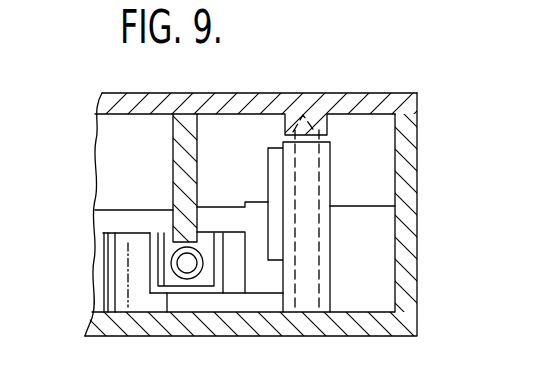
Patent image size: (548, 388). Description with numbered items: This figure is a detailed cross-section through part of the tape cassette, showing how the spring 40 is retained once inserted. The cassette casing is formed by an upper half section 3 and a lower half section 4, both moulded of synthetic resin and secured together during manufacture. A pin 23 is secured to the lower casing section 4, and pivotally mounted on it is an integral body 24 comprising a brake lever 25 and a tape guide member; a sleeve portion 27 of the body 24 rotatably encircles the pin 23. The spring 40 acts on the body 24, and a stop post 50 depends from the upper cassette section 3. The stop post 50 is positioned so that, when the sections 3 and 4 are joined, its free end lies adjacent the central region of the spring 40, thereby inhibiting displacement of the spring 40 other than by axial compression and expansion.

The upper half section 3 is at (402, 99).
The lower half section 4 is at (407, 266).
The stop post 50 is at (184, 186).
The sleeve portion 27 is at (330, 142).
The pin 23 is at (313, 250).
The integral body 24 is at (328, 292).
The spring 40 is at (168, 262).
The brake lever 25 is at (120, 303).